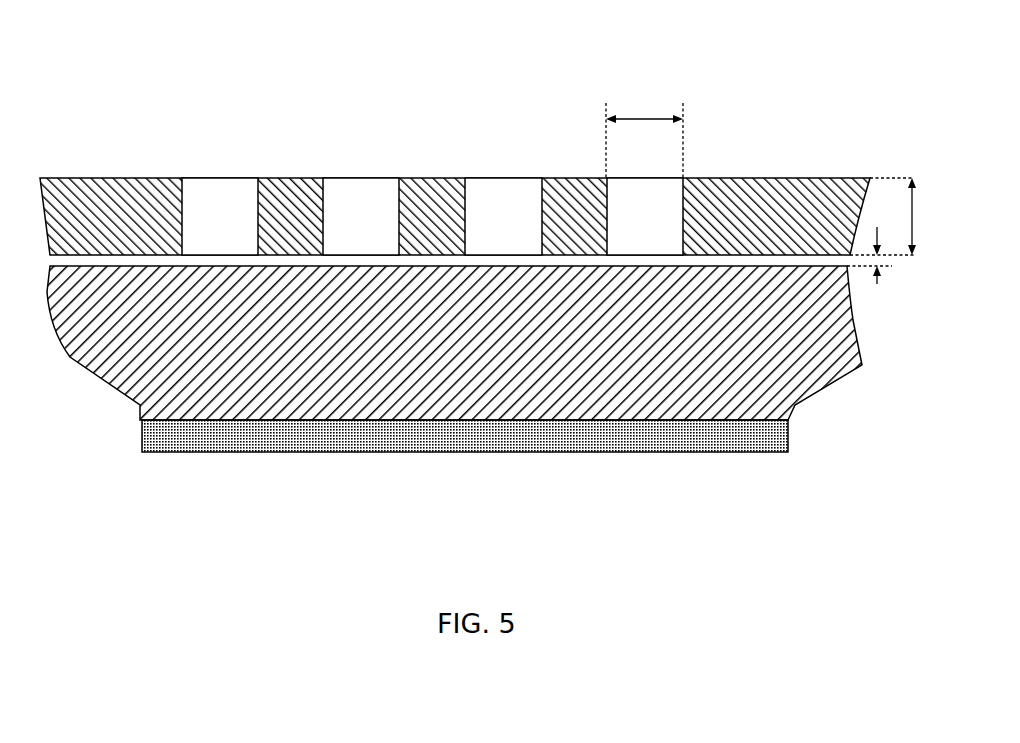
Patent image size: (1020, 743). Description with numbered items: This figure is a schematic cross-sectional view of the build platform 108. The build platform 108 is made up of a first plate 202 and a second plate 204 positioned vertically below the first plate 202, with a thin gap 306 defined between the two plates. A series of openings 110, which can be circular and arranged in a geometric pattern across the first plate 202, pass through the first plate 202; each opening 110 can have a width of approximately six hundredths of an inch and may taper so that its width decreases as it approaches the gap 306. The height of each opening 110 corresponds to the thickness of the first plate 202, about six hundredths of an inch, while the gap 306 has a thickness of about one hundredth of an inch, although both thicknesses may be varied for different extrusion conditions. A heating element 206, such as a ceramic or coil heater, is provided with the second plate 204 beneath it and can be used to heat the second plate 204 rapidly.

The build platform 108 is at (158, 47).
The openings 110 is at (365, 190).
The first plate 202 is at (455, 194).
The second plate 204 is at (454, 343).
The heating element 206 is at (745, 444).
The gap 306 is at (42, 261).